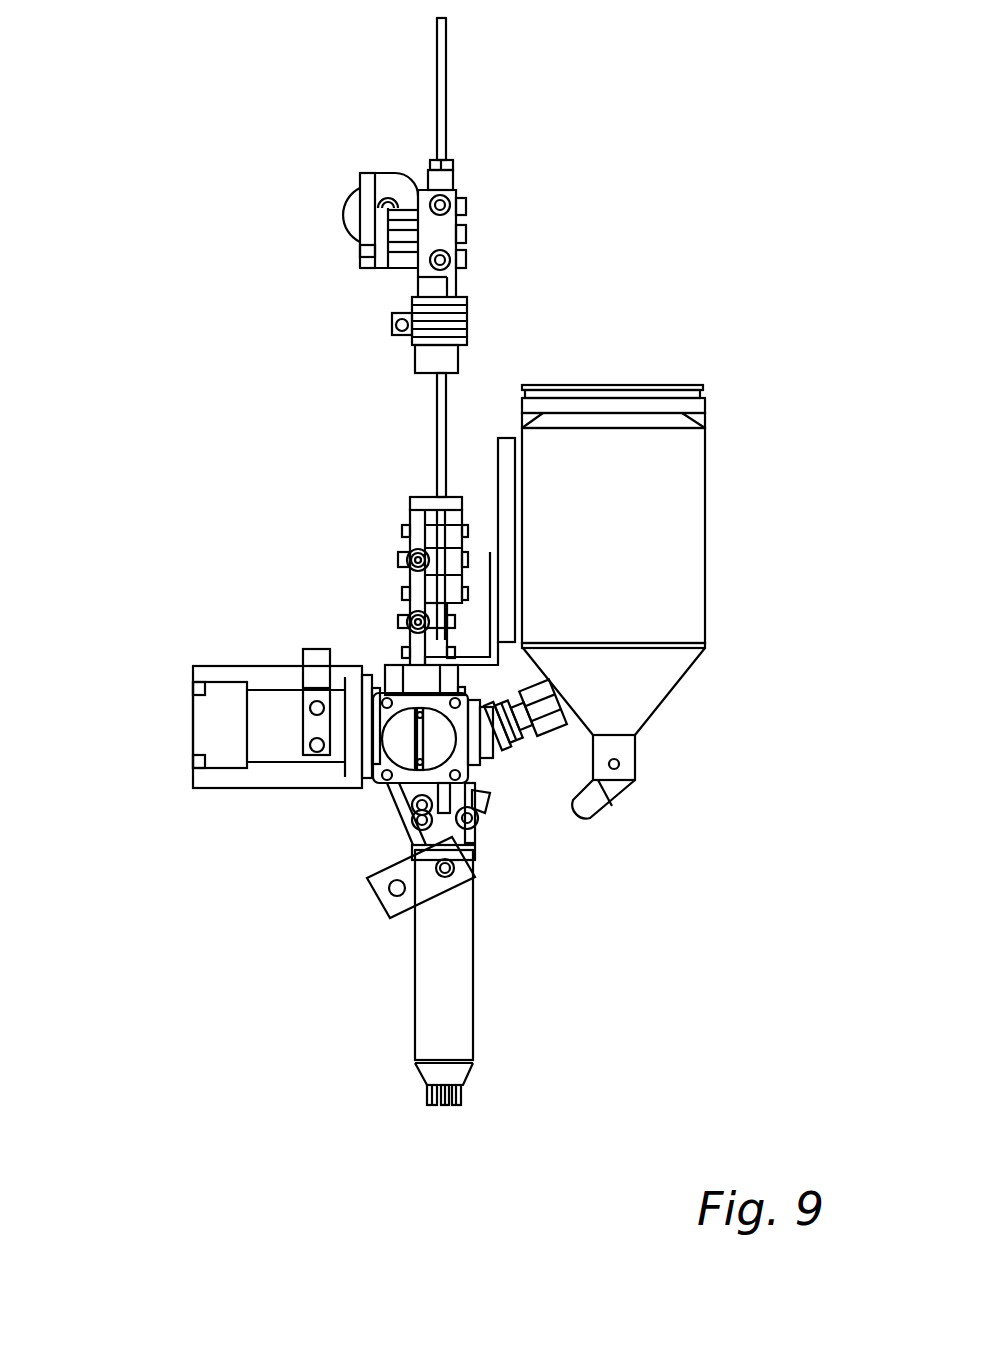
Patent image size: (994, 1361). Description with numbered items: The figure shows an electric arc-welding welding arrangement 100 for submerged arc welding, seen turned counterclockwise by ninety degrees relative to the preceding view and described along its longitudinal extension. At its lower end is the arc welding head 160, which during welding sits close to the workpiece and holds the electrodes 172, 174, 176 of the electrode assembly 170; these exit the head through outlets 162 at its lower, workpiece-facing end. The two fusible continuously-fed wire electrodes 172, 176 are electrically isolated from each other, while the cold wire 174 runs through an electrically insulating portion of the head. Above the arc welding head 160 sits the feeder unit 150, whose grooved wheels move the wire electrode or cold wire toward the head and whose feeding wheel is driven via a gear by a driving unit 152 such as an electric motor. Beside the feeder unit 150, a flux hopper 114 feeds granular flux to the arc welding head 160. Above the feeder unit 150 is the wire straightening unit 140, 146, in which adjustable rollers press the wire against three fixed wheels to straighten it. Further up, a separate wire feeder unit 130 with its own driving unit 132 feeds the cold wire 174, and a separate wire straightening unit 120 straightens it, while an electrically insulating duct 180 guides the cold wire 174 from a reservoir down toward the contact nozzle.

The electric arc-welding welding arrangement 100 is at (605, 165).
The flux hopper 114 is at (705, 527).
The wire straightening unit 120 is at (457, 163).
The wire feeder unit 130 is at (468, 240).
The driving unit 132 is at (352, 198).
The wire straightening unit 140 is at (314, 581).
The valve adjustment block 146 is at (380, 575).
The feeder unit 150 is at (507, 687).
The driving unit 152 is at (217, 725).
The arc welding head 160 is at (475, 972).
The outlets 162 is at (446, 1130).
The electrode assembly 170 is at (472, 1141).
The wire electrode 172 is at (423, 1093).
The cold wire 174 is at (440, 1107).
The wire electrode 176 is at (460, 1107).
The electrically insulating duct 180 is at (435, 90).